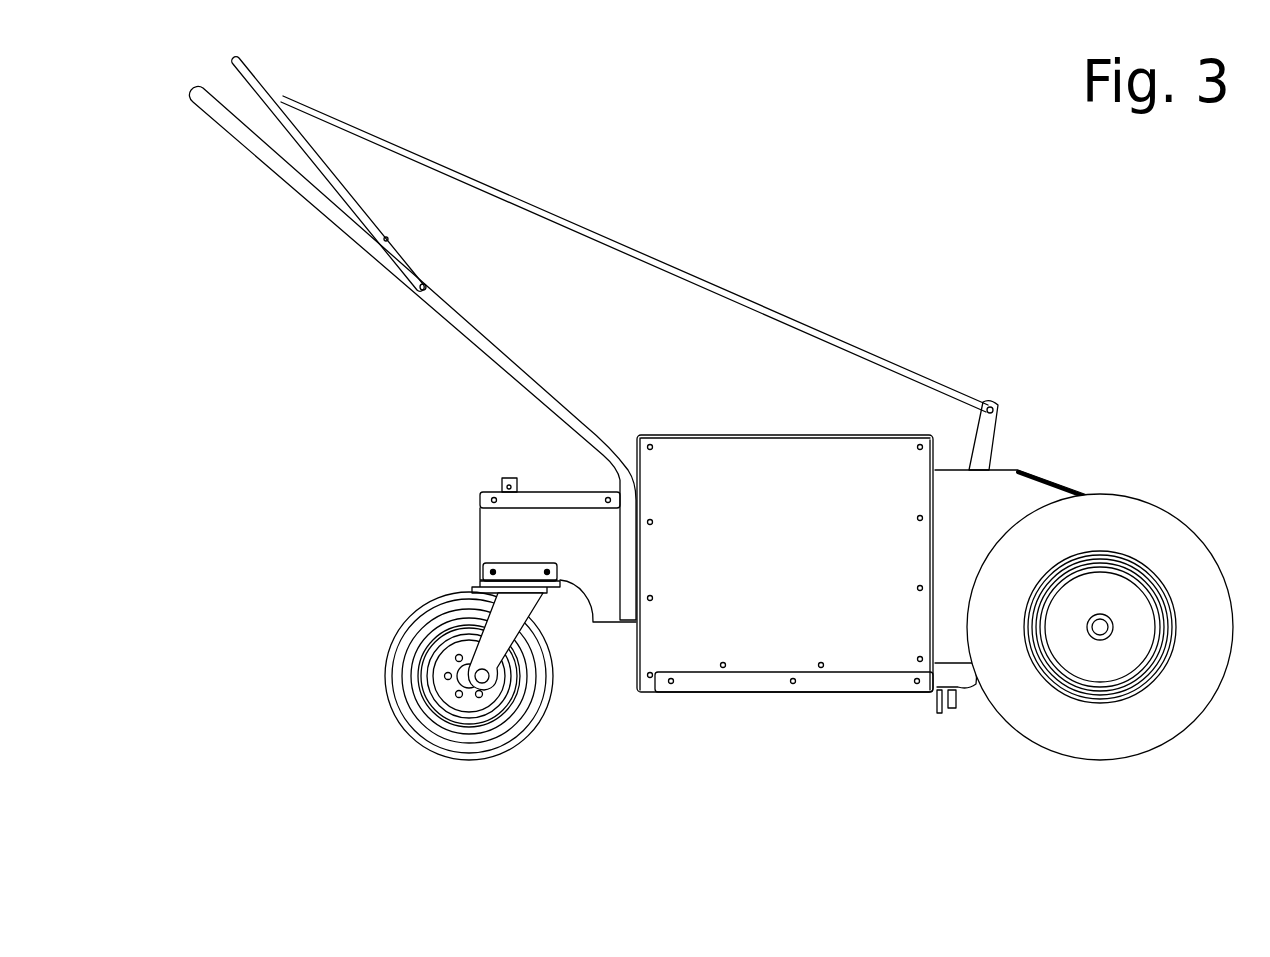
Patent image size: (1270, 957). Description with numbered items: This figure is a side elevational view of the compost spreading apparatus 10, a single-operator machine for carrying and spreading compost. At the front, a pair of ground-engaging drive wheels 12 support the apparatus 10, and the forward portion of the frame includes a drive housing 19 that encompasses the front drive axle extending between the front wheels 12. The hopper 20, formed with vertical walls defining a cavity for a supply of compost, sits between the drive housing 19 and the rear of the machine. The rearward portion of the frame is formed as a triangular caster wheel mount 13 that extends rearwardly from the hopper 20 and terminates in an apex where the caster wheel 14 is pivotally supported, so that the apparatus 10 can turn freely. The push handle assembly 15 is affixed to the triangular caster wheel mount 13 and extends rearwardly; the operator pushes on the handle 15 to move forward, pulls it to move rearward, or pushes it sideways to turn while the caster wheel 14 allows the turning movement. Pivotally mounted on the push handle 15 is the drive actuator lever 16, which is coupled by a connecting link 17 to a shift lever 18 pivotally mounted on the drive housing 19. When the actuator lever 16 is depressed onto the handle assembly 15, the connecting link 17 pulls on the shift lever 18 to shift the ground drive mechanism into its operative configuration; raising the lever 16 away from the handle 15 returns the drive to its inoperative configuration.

The compost spreading apparatus 10 is at (800, 180).
The ground-engaging drive wheels 12 is at (1165, 715).
The triangular caster wheel mount 13 is at (523, 537).
The caster wheel 14 is at (428, 745).
The push handle assembly 15 is at (327, 218).
The drive actuator lever 16 is at (268, 93).
The connecting link 17 is at (722, 292).
The shift lever 18 is at (985, 445).
The drive housing 19 is at (985, 502).
The hopper 20 is at (793, 650).